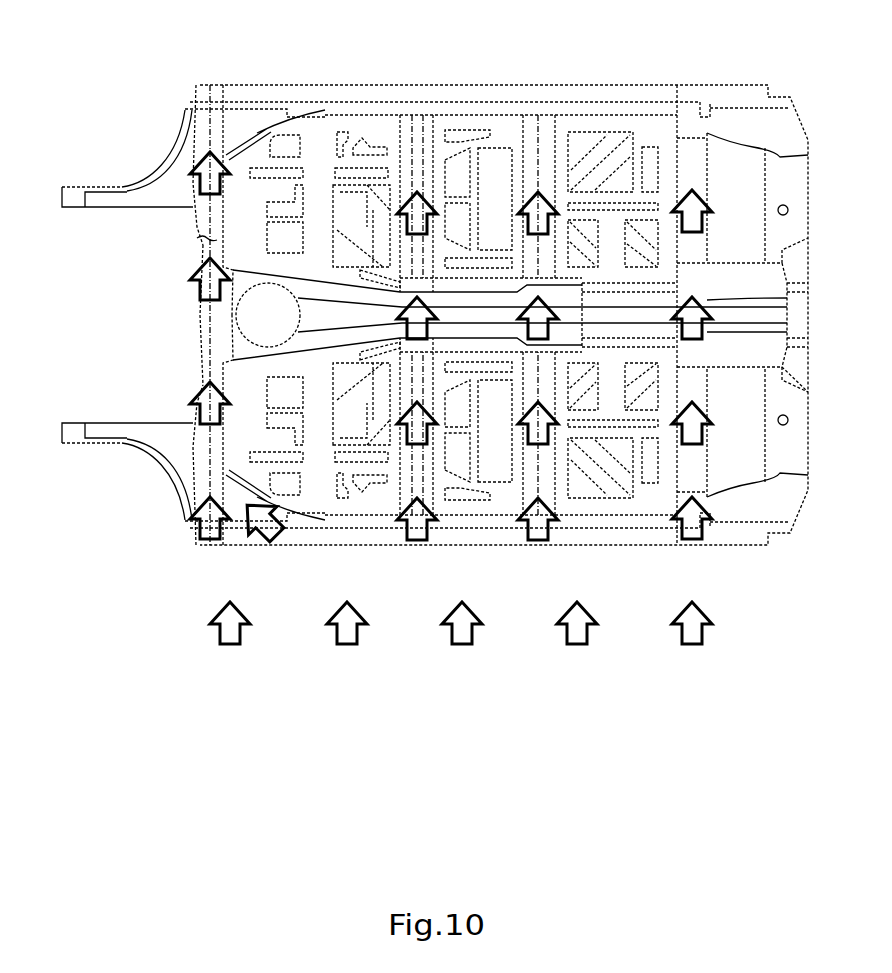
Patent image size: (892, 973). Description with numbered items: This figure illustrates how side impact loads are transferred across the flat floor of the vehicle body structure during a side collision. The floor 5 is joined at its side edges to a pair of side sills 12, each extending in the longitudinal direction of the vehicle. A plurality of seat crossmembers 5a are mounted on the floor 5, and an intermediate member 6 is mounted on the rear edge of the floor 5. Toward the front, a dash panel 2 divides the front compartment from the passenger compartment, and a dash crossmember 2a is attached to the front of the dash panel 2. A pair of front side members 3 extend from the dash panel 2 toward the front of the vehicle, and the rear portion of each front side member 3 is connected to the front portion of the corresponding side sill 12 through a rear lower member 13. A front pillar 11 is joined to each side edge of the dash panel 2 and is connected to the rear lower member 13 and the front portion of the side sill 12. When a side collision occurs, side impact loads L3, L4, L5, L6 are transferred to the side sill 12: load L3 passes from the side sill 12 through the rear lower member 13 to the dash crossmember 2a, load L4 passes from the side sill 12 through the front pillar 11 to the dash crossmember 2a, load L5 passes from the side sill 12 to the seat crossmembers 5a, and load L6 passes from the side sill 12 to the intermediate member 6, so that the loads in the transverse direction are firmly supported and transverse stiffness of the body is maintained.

The side sill 12 is at (603, 79).
The front pillar 11 is at (227, 107).
The rear lower member 13 is at (150, 151).
The front side member 3 is at (113, 200).
The dash panel 2 is at (205, 243).
The dash crossmember 2a is at (200, 315).
The seat crossmember 5a is at (417, 117).
The floor 5 is at (498, 117).
The intermediate member 6 is at (692, 146).
The side impact load L3 is at (209, 532).
The side impact load L4 is at (277, 533).
The side impact load L5 is at (425, 540).
The side impact load L6 is at (686, 537).